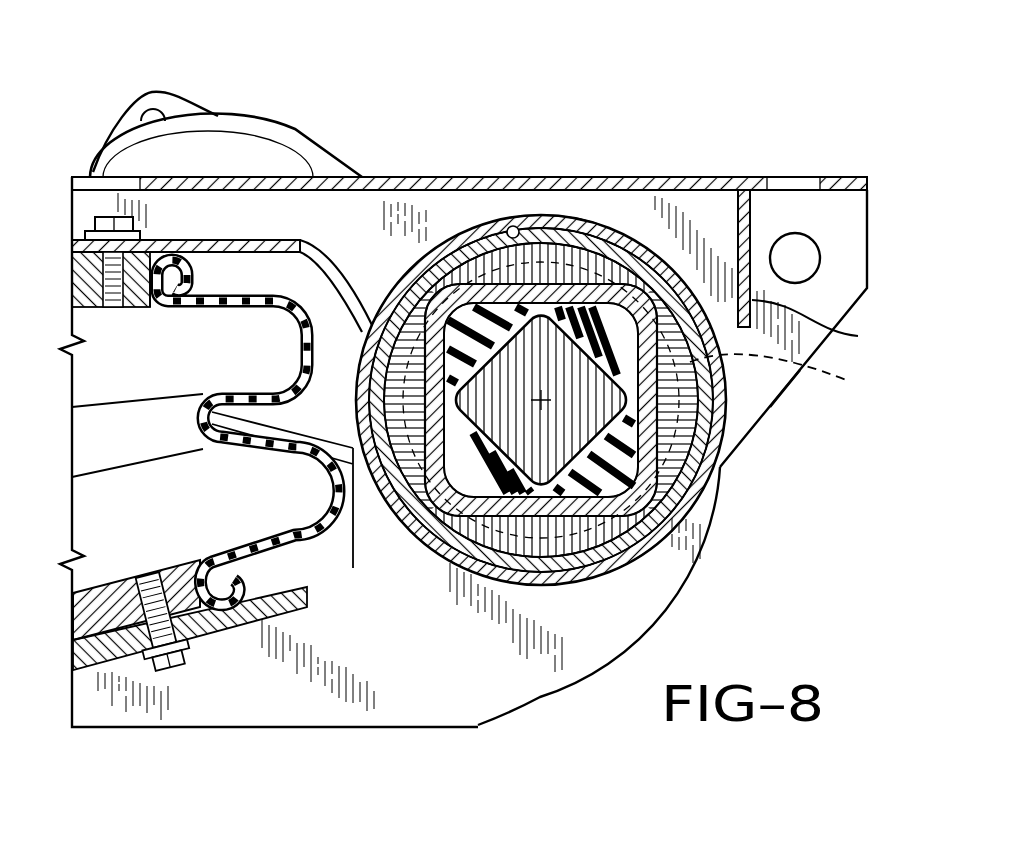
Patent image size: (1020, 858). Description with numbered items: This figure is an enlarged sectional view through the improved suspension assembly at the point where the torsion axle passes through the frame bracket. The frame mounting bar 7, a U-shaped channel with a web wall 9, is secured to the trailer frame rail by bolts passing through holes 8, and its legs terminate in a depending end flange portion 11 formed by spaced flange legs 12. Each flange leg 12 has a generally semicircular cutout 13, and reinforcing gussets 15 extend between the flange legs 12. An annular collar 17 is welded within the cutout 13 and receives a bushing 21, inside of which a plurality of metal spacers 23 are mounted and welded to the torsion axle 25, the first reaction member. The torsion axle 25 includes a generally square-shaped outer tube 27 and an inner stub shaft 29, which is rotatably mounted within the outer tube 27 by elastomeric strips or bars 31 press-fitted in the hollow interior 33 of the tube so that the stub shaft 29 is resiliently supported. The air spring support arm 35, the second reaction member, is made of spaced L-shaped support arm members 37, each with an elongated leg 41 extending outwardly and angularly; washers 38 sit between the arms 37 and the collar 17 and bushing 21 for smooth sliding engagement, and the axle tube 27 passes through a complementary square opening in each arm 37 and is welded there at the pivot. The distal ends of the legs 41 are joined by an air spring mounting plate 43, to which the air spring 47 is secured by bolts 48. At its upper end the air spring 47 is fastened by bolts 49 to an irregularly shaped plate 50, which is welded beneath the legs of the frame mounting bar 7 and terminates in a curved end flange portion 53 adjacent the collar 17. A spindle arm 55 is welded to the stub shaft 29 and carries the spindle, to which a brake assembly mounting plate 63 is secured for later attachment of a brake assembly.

The frame mounting bar 7 is at (739, 172).
The holes 8 is at (797, 181).
The web wall 9 is at (656, 180).
The depending end flange portion 11 is at (786, 393).
The flange legs 12 is at (757, 402).
The semicircular cutout 13 is at (514, 226).
The reinforcing gussets 15 is at (858, 336).
The annular collar 17 is at (470, 233).
The bushing 21 is at (570, 245).
The metal spacers 23 is at (582, 272).
The torsion axle 25 is at (494, 514).
The outer tube 27 is at (580, 513).
The stub shaft 29 is at (580, 503).
The elastomeric strips or bars 31 is at (622, 332).
The hollow interior 33 is at (553, 433).
The air spring support arm 35 is at (481, 724).
The support arm members 37 is at (420, 686).
The washers 38 is at (783, 372).
The elongated leg 41 is at (106, 713).
The air spring mounting plate 43 is at (230, 615).
The air spring 47 is at (310, 540).
The bolts 48 is at (175, 668).
The bolts 49 is at (113, 218).
The irregularly shaped plate 50 is at (220, 240).
The curved end flange portion 53 is at (353, 298).
The spindle arm 55 is at (290, 127).
The brake assembly mounting plate 63 is at (167, 103).